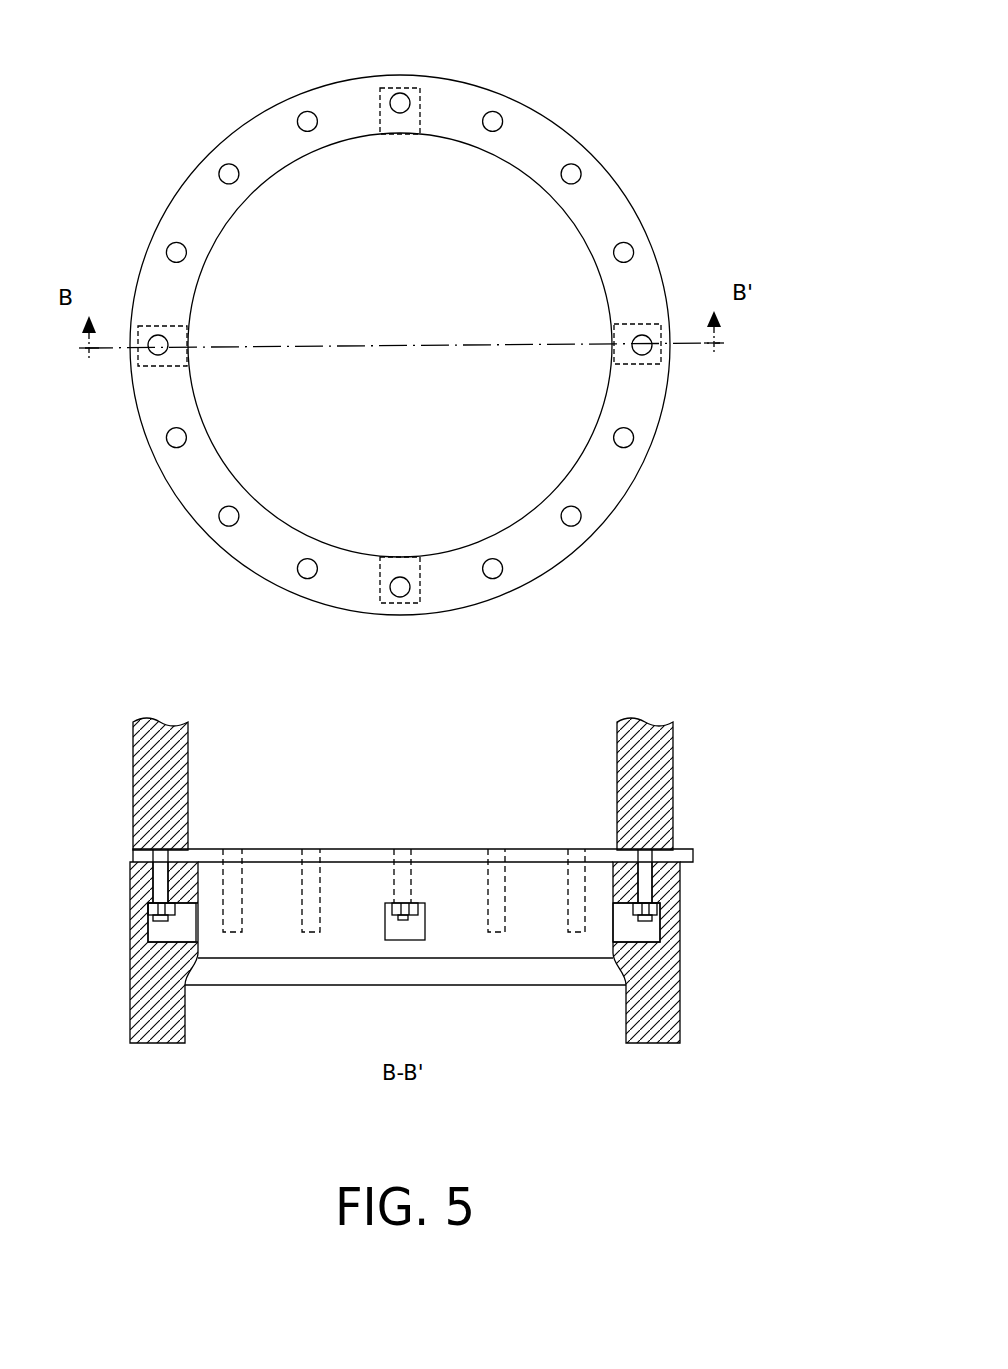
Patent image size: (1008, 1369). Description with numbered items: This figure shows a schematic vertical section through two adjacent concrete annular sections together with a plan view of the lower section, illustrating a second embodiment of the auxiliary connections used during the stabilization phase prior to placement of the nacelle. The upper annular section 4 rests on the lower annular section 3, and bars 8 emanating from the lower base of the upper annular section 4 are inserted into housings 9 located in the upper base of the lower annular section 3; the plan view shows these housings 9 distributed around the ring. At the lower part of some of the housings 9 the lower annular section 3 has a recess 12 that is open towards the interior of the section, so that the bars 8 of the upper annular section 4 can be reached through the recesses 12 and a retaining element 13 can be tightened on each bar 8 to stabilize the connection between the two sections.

The annular section 3 is at (209, 123).
The annular section 4 is at (155, 793).
The bar 8 is at (160, 860).
The housing 9 is at (228, 518).
The recess 12 is at (380, 580).
The retaining element 13 is at (152, 910).